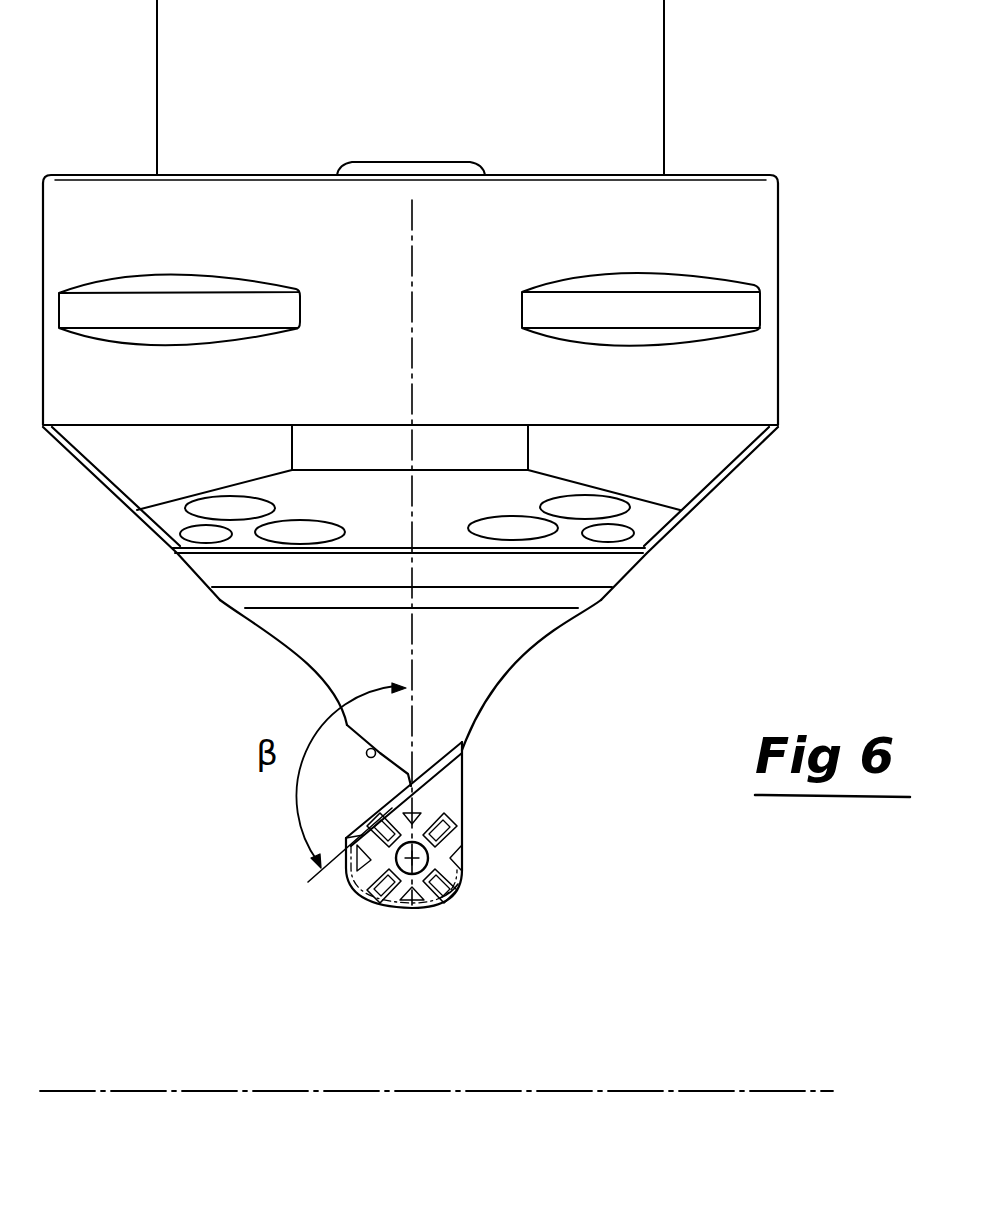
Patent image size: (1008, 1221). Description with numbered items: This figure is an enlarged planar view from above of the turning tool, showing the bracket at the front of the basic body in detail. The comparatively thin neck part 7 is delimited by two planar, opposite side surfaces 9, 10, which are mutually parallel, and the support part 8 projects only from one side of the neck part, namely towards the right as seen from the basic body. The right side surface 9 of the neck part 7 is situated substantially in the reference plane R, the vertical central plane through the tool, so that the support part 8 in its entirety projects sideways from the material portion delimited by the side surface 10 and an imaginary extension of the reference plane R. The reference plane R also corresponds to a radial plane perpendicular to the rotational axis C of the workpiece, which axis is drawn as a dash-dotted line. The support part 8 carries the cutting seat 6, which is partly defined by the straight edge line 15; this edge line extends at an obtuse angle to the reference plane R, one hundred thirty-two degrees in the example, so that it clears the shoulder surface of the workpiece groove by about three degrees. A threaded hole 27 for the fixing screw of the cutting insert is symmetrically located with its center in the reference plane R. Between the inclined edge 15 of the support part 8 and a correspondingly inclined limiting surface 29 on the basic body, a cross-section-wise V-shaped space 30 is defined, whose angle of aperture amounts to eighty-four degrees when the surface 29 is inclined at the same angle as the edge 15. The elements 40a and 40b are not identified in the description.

The cutting seat 6 is at (434, 912).
The neck part 7 is at (437, 785).
The support part 8 is at (362, 885).
The side surface 9 is at (408, 786).
The side surface 10 is at (463, 770).
The edge line 15 is at (363, 835).
The threaded hole 27 is at (432, 862).
The limiting surface 29 is at (378, 755).
The V-shaped space 30 is at (353, 798).
The slot 40a is at (457, 892).
The slot 40b is at (452, 836).
The reference plane R is at (412, 367).
The center axis C is at (747, 1091).